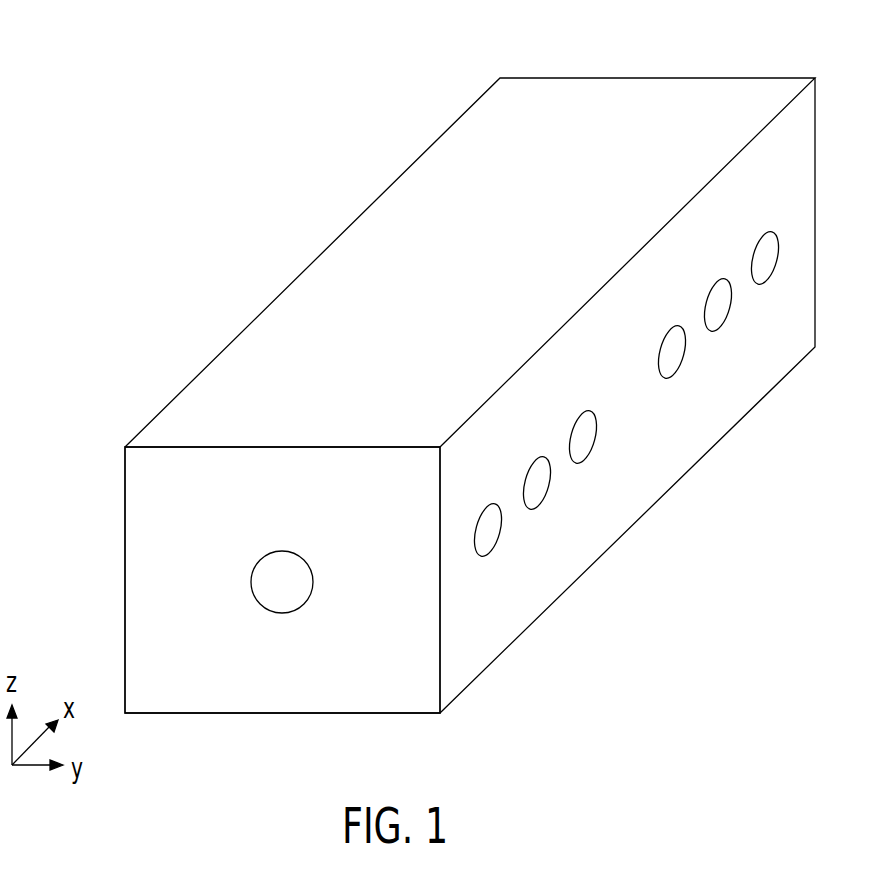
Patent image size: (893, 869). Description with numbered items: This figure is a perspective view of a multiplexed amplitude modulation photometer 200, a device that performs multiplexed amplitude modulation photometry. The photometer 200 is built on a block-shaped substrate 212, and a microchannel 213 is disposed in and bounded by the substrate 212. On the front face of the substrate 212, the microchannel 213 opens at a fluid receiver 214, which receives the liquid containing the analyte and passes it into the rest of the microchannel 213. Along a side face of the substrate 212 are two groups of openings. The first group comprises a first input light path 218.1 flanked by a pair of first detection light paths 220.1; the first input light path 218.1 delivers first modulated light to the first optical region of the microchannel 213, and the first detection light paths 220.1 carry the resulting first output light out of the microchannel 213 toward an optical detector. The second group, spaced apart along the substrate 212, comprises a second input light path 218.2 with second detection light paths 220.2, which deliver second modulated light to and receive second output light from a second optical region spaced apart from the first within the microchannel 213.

The multiplexed amplitude modulation photometer 200 is at (125, 112).
The substrate 212 is at (723, 78).
The microchannel 213 is at (283, 548).
The fluid receiver 214 is at (281, 612).
The first input light path 218.1 is at (530, 509).
The second input light path 218.2 is at (711, 331).
The first detection light path 220.1 is at (481, 556).
The second detection light path 220.2 is at (665, 378).